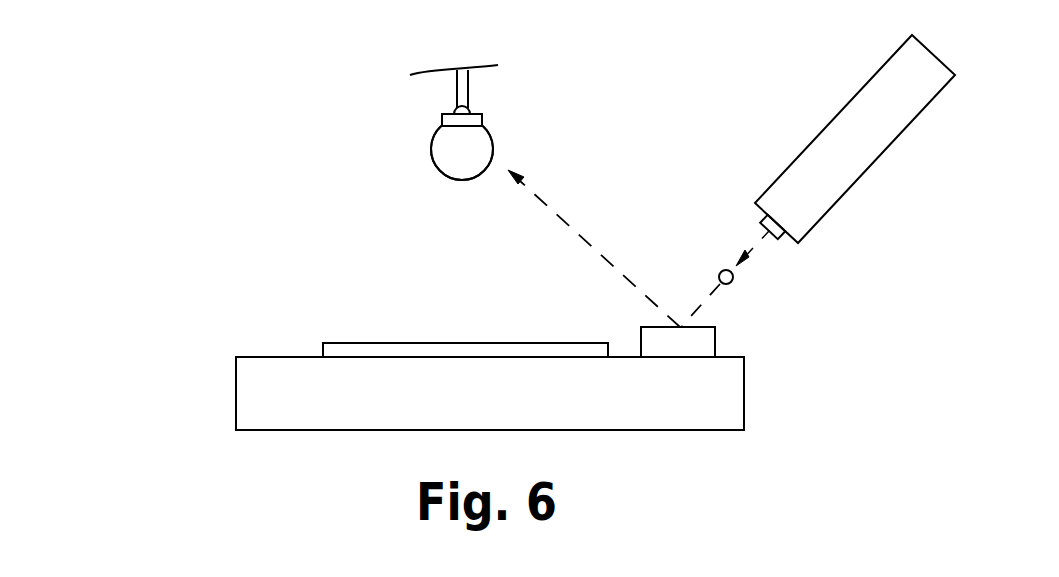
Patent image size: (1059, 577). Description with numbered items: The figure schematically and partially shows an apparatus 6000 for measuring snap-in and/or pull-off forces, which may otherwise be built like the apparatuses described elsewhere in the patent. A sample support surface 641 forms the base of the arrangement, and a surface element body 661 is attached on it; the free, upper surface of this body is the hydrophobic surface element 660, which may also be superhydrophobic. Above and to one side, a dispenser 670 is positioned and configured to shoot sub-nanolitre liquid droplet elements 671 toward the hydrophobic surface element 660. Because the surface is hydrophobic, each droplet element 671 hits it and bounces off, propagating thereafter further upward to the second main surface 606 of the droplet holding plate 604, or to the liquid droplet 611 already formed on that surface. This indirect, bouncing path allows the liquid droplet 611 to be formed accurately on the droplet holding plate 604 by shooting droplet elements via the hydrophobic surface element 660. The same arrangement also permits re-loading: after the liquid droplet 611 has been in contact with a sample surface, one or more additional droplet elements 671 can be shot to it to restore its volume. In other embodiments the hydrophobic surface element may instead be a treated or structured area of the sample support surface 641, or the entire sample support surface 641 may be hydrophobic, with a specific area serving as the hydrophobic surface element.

The apparatus 6000 is at (253, 175).
The droplet holding plate 604 is at (482, 122).
The second main surface 606 is at (452, 130).
The liquid droplet 611 is at (491, 138).
The sample support surface 641 is at (293, 355).
The hydrophobic surface element 660 is at (697, 327).
The surface element body 661 is at (698, 340).
The dispenser 670 is at (807, 145).
The liquid droplet element 671 is at (718, 270).